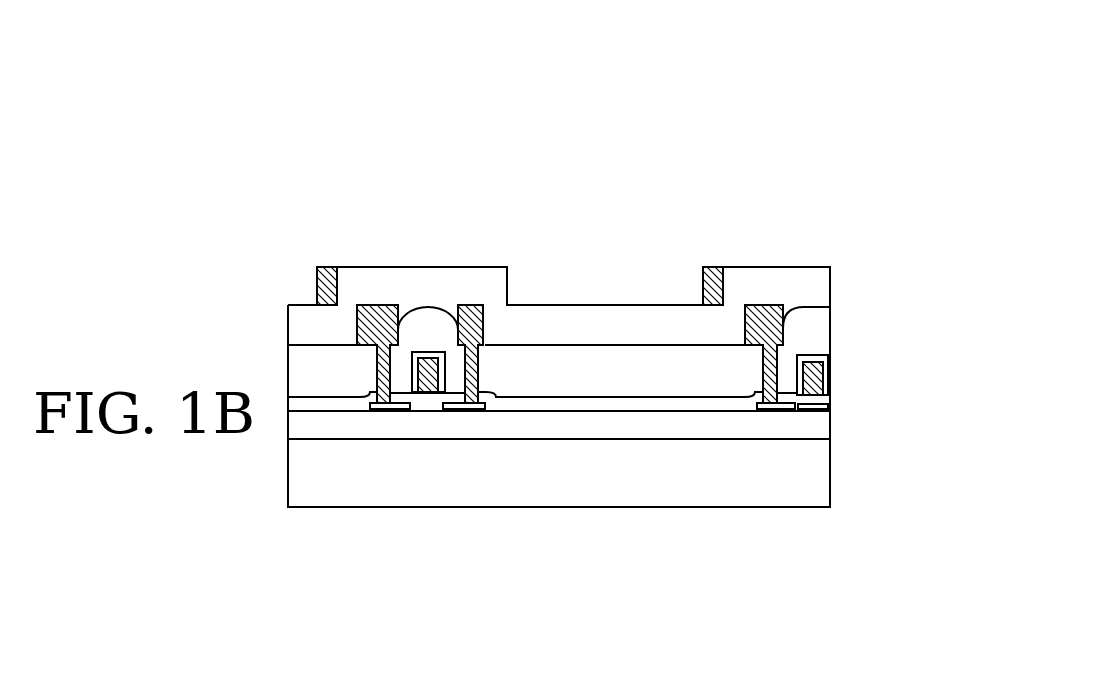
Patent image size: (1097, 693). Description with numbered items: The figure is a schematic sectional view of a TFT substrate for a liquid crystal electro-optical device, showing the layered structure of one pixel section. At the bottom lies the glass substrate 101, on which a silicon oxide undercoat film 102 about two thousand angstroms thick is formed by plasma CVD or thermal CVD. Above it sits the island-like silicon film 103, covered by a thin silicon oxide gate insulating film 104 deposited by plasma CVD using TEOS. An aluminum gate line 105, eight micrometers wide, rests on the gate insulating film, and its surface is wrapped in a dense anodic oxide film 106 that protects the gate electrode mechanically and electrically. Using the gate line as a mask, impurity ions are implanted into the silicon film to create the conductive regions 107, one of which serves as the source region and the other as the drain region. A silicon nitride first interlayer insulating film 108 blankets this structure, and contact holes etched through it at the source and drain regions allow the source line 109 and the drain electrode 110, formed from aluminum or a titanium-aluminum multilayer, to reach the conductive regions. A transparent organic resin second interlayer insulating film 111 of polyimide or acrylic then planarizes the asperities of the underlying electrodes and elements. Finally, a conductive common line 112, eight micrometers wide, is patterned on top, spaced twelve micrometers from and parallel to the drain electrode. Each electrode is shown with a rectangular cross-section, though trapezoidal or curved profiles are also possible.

The glass substrate 101 is at (600, 492).
The undercoat film 102 is at (698, 427).
The island-like silicon film 103 is at (815, 417).
The gate insulating film 104 is at (815, 405).
The gate line 105 is at (427, 378).
The anodic oxide film 106 is at (428, 352).
The conductive regions 107 is at (395, 403).
The first interlayer insulating film 108 is at (662, 367).
The source line 109 is at (370, 306).
The drain electrode 110 is at (472, 305).
The second interlayer insulating film 111 is at (578, 333).
The common line 112 is at (317, 268).